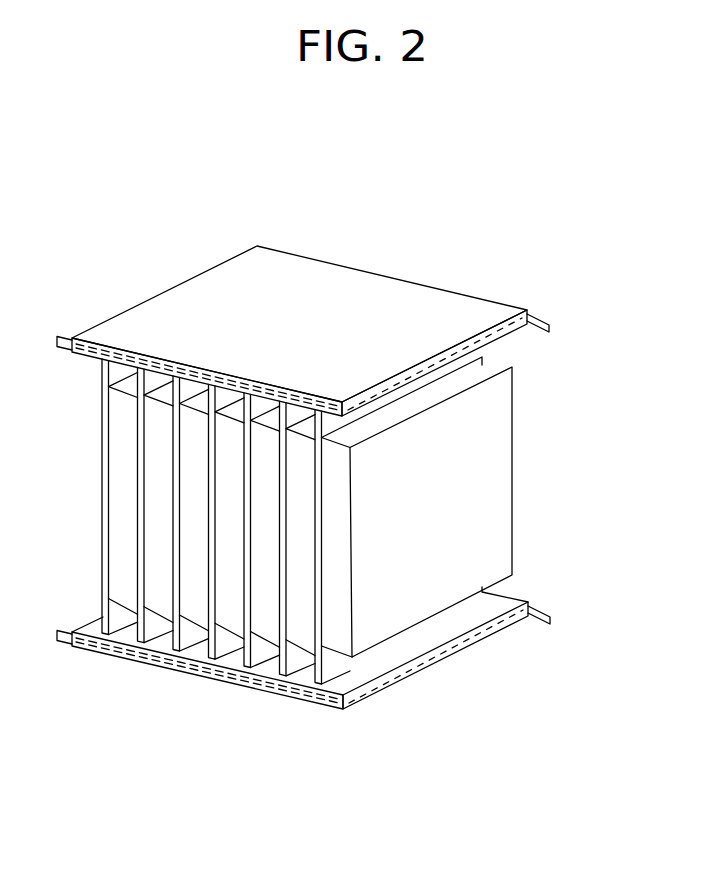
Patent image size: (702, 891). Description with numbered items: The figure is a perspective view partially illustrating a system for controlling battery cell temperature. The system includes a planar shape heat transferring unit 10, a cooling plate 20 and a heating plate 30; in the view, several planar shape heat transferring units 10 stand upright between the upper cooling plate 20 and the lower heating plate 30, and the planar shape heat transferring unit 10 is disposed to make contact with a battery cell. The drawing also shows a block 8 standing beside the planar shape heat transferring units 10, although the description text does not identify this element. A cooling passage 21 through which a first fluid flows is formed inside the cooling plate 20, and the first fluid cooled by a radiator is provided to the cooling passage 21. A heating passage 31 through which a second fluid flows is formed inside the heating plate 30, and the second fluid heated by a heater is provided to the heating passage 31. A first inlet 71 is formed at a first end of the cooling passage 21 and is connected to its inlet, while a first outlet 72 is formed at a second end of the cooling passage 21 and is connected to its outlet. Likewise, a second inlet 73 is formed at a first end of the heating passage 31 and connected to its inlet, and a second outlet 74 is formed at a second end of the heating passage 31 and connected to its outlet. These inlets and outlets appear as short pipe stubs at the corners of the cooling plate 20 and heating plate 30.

The block 8 is at (491, 490).
The planar shape heat transferring unit 10 is at (312, 676).
The cooling plate 20 is at (376, 300).
The cooling passage 21 is at (84, 360).
The heating plate 30 is at (388, 692).
The heating passage 31 is at (85, 650).
The first inlet 71 is at (66, 336).
The first outlet 72 is at (536, 313).
The second inlet 73 is at (66, 631).
The second outlet 74 is at (536, 607).